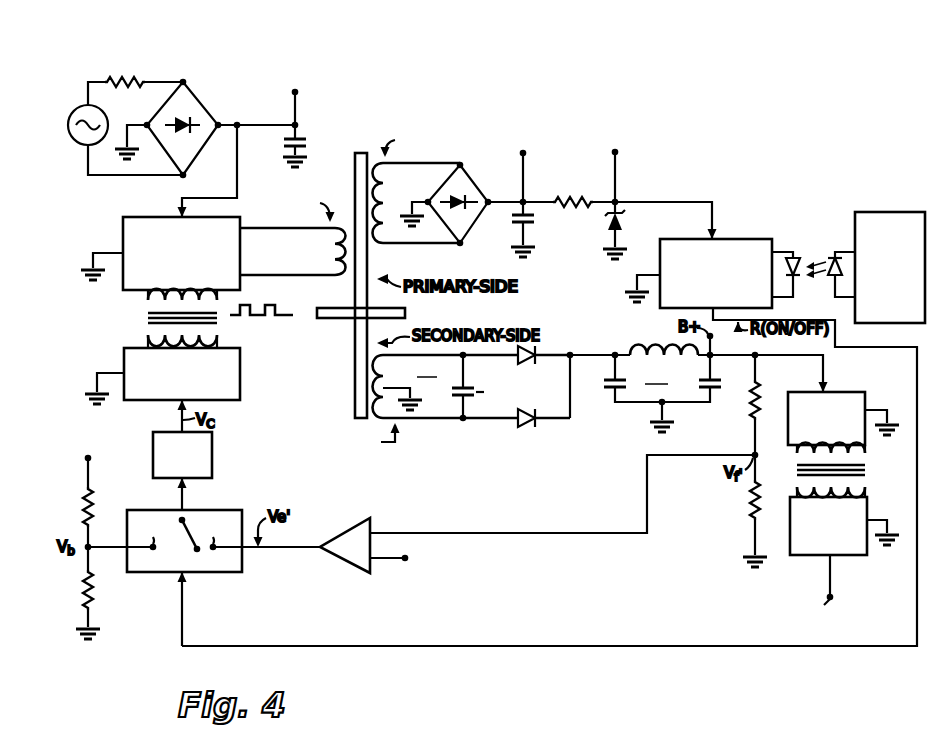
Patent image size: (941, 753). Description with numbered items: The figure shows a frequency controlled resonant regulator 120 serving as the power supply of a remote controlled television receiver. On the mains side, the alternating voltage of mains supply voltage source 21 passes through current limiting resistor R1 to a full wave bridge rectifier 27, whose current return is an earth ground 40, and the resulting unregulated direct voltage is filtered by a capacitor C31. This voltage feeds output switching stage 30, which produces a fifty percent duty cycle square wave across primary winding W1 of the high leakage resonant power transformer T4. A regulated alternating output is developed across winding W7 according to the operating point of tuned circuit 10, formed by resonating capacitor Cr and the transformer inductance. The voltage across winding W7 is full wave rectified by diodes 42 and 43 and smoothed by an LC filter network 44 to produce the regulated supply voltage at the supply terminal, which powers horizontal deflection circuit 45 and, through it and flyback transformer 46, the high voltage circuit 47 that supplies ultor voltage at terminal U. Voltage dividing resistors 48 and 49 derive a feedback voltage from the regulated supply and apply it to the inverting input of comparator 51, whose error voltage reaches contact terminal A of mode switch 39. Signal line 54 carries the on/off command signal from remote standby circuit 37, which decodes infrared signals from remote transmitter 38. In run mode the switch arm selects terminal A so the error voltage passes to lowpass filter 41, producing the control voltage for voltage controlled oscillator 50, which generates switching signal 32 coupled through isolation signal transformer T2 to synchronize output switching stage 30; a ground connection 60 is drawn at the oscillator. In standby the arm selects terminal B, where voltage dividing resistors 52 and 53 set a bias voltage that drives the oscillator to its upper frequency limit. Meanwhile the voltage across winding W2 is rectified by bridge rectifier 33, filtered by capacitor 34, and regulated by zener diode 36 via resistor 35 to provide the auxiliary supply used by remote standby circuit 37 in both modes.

The mains supply voltage source 21 is at (77, 108).
The bridge rectifier 27 is at (204, 92).
The output switching stage 30 is at (123, 234).
The switching signal 32 is at (262, 318).
The bridge rectifier 33 is at (466, 234).
The capacitor 34 is at (536, 222).
The resistor 35 is at (578, 186).
The zener diode 36 is at (623, 220).
The remote standby circuit 37 is at (745, 238).
The remote transmitter 38 is at (893, 210).
The mode switch 39 is at (217, 510).
The earth ground 40 is at (81, 276).
The lowpass filter 41 is at (212, 455).
The diode 42 is at (522, 364).
The diode 43 is at (532, 421).
The LC filter network 44 is at (699, 389).
The horizontal deflection circuit 45 is at (863, 394).
The flyback transformer 46 is at (872, 470).
The high voltage circuit 47 is at (838, 556).
The voltage dividing resistor 48 is at (748, 406).
The voltage dividing resistor 49 is at (748, 510).
The voltage controlled oscillator 50 is at (240, 370).
The comparator 51 is at (356, 522).
The voltage dividing resistor 52 is at (82, 501).
The voltage dividing resistor 53 is at (85, 590).
The signal line 54 is at (182, 618).
The ground connection 60 is at (88, 393).
The tuned circuit 10 is at (428, 367).
The frequency controlled resonant regulator 120 is at (578, 101).
The current limiting resistor R1 is at (118, 92).
The capacitor C31 is at (264, 115).
The isolation signal transformer T2 is at (139, 318).
The resonant power transformer T4 is at (361, 272).
The primary winding W1 is at (293, 234).
The winding W2 is at (417, 185).
The winding W7 is at (465, 403).
The resonating capacitor Cr is at (478, 387).